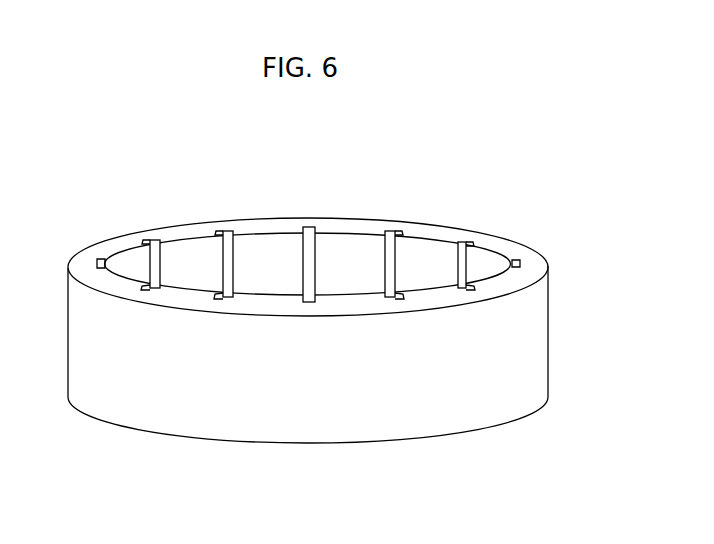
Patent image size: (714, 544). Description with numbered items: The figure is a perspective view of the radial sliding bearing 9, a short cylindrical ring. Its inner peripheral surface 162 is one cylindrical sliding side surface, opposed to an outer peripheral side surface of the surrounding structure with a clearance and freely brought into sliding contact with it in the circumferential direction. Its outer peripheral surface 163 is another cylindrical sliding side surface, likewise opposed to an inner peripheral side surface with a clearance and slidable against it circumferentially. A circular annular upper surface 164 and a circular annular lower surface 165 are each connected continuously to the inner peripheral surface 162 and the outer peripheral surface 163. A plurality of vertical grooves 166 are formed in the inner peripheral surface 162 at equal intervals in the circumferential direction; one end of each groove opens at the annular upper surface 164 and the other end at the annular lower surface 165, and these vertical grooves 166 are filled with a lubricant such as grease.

The radial sliding bearing 9 is at (552, 236).
The inner peripheral surface 162 is at (351, 250).
The outer peripheral surface 163 is at (244, 419).
The circular annular upper surface 164 is at (188, 232).
The circular annular lower surface 165 is at (347, 443).
The vertical grooves 166 is at (232, 268).